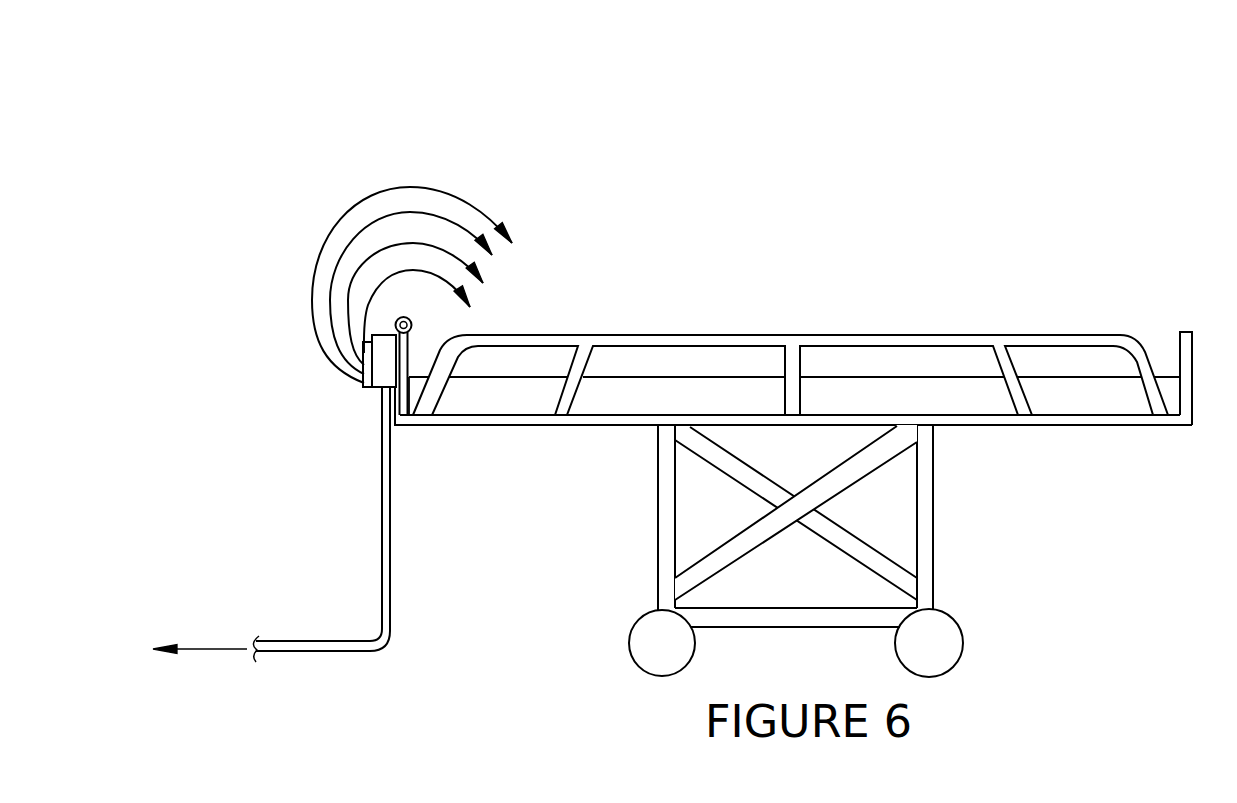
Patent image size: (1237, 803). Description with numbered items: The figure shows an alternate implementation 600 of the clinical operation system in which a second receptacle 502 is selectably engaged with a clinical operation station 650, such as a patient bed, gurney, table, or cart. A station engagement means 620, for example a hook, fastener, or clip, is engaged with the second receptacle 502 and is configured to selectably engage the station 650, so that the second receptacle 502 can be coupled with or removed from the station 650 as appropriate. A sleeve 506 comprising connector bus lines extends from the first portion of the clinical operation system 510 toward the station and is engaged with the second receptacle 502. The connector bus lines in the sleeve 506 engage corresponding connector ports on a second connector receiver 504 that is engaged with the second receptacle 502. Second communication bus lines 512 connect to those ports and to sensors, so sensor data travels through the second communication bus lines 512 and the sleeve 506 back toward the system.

The second receptacle 502 is at (372, 392).
The second connector receiver 504 is at (367, 387).
The sleeve 506 is at (390, 567).
The first portion of the clinical operation system 510 is at (202, 647).
The second communication bus lines 512 is at (453, 182).
The alternate implementation 600 is at (1037, 142).
The station engagement means 620 is at (412, 326).
The clinical operation station 650 is at (973, 320).